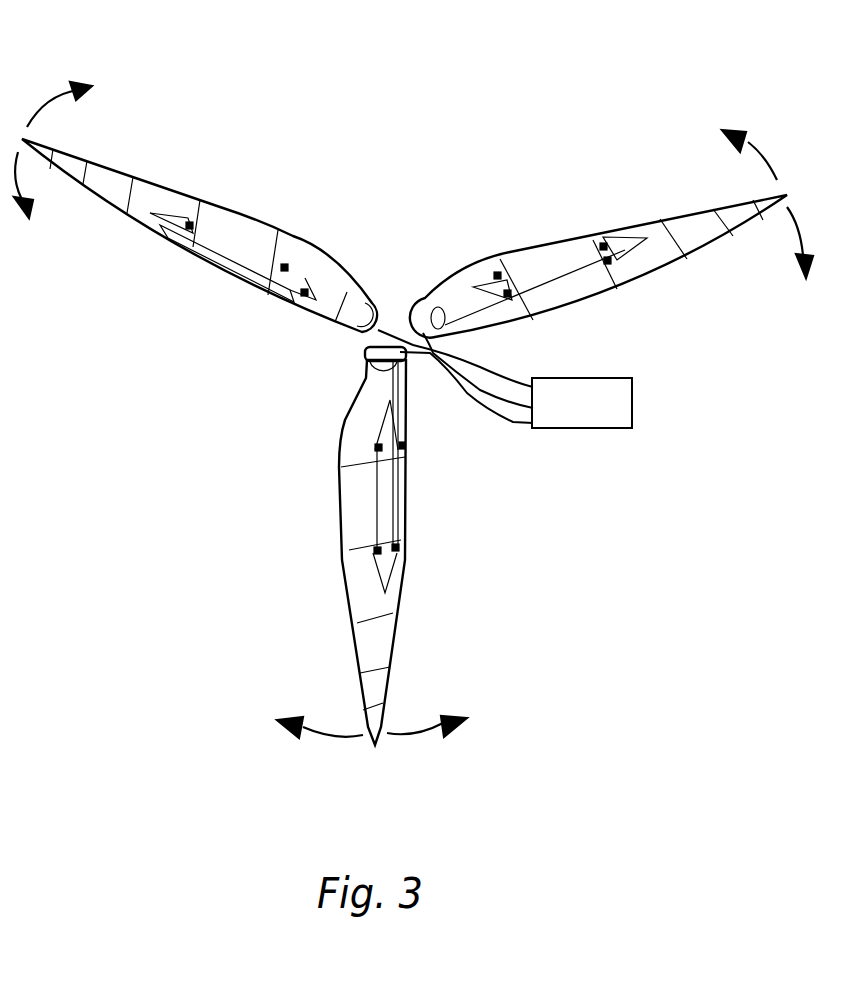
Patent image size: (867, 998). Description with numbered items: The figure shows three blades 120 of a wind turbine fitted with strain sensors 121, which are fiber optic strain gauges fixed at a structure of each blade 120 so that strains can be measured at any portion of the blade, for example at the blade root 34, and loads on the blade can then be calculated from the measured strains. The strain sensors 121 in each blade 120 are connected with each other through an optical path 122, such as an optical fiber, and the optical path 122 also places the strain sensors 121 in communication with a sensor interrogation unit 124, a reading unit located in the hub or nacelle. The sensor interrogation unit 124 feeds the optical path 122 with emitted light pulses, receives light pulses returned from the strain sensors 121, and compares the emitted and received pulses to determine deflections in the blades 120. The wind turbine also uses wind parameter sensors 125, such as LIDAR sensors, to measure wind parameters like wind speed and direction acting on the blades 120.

The blade 120 is at (100, 177).
The strain sensor 121 is at (193, 230).
The optical path 122 is at (260, 277).
The blade root 34 is at (357, 300).
The sensor interrogation unit 124 is at (600, 410).
The wind parameter sensor 125 is at (33, 105).